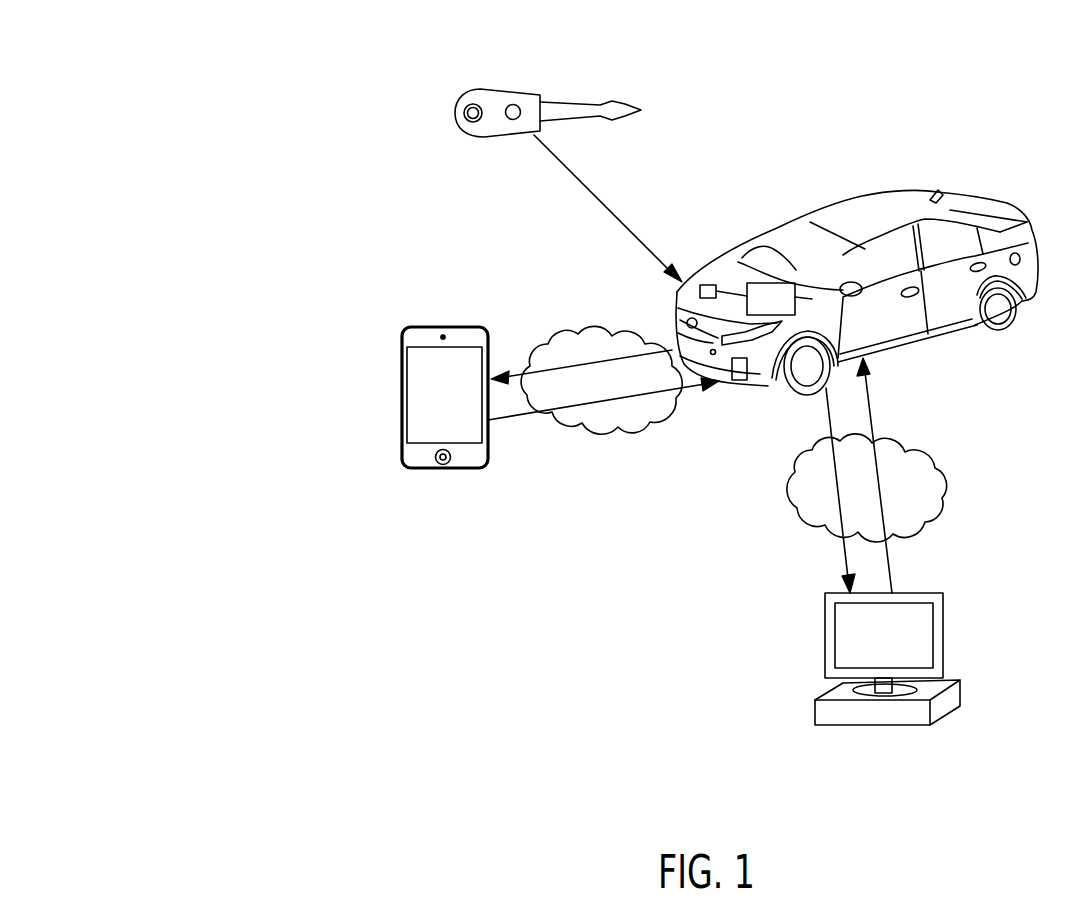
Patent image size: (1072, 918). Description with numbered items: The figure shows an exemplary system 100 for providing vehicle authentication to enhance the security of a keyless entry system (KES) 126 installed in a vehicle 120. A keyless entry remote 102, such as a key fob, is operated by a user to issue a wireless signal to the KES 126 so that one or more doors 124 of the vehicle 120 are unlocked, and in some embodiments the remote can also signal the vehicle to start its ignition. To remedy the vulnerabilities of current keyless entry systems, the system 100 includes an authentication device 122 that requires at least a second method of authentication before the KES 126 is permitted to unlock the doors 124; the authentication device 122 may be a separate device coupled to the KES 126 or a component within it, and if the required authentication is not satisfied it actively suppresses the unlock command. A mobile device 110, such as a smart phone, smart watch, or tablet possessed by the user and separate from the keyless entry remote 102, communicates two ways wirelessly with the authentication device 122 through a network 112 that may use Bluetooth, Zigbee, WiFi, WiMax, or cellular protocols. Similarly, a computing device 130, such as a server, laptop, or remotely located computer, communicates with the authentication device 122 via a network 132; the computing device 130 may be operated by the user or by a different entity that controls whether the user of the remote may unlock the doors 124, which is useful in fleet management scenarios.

The system 100 is at (140, 93).
The keyless entry remote 102 is at (517, 90).
The mobile device 110 is at (425, 326).
The network 112 is at (620, 428).
The vehicle 120 is at (882, 193).
The authentication device 122 is at (707, 282).
The doors 124 is at (912, 299).
The keyless entry system 126 is at (777, 281).
The computing device 130 is at (945, 633).
The network 132 is at (940, 482).